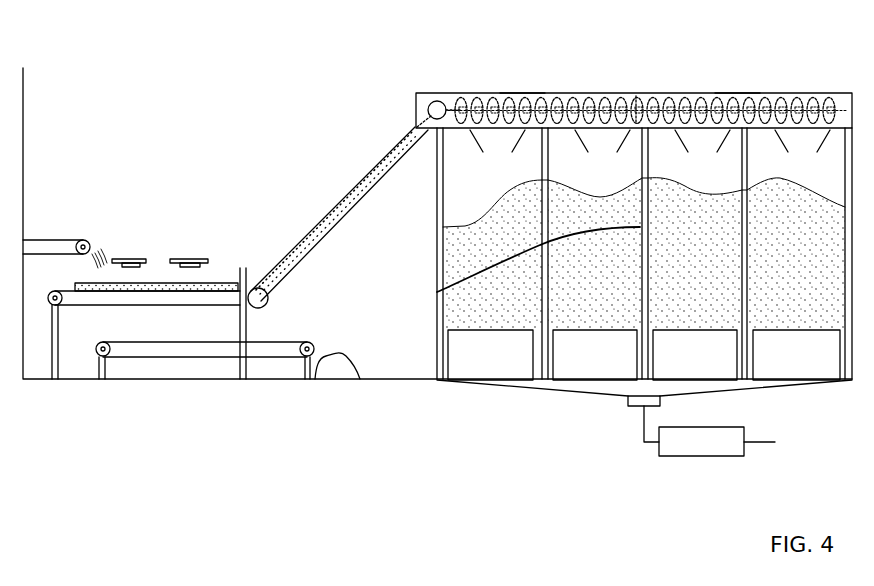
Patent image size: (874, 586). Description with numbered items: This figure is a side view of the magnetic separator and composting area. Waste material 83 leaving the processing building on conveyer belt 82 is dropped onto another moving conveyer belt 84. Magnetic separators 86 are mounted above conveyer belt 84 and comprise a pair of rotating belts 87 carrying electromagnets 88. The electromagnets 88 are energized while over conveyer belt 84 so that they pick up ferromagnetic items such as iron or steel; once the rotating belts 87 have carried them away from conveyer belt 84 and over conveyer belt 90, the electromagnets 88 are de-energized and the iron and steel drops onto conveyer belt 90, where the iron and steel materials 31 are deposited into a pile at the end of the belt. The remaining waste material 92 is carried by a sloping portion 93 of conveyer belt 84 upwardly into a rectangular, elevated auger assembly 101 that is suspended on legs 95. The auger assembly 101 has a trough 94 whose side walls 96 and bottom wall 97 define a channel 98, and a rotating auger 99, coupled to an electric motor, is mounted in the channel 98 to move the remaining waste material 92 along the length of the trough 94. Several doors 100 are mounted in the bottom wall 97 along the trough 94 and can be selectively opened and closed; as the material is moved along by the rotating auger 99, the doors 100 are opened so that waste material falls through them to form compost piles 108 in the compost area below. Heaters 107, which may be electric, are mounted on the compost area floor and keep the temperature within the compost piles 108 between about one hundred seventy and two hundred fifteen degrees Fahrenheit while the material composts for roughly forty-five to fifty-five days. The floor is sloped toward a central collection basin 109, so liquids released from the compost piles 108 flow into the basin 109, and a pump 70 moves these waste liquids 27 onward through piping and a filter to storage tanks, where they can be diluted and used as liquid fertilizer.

The conveyer belt 82 is at (48, 240).
The waste material 83 is at (120, 284).
The conveyer belt 84 is at (93, 305).
The magnetic separator 86 is at (176, 232).
The rotating belt 87 is at (198, 259).
The electromagnet 88 is at (192, 264).
The conveyer belt 90 is at (170, 357).
The remaining waste material 92 is at (320, 205).
The sloping portion 93 is at (302, 272).
The iron and steel materials 31 is at (337, 357).
The trough 94 is at (570, 93).
The legs 95 is at (437, 292).
The side wall 96 is at (420, 100).
The bottom wall 97 is at (458, 132).
The channel 98 is at (739, 84).
The rotating auger 99 is at (637, 93).
The door 100 is at (706, 152).
The auger assembly 101 is at (520, 84).
The heater 107 is at (644, 355).
The compost pile 108 is at (479, 222).
The central collection basin 109 is at (594, 394).
The pump 70 is at (701, 441).
The waste liquids 27 is at (798, 442).